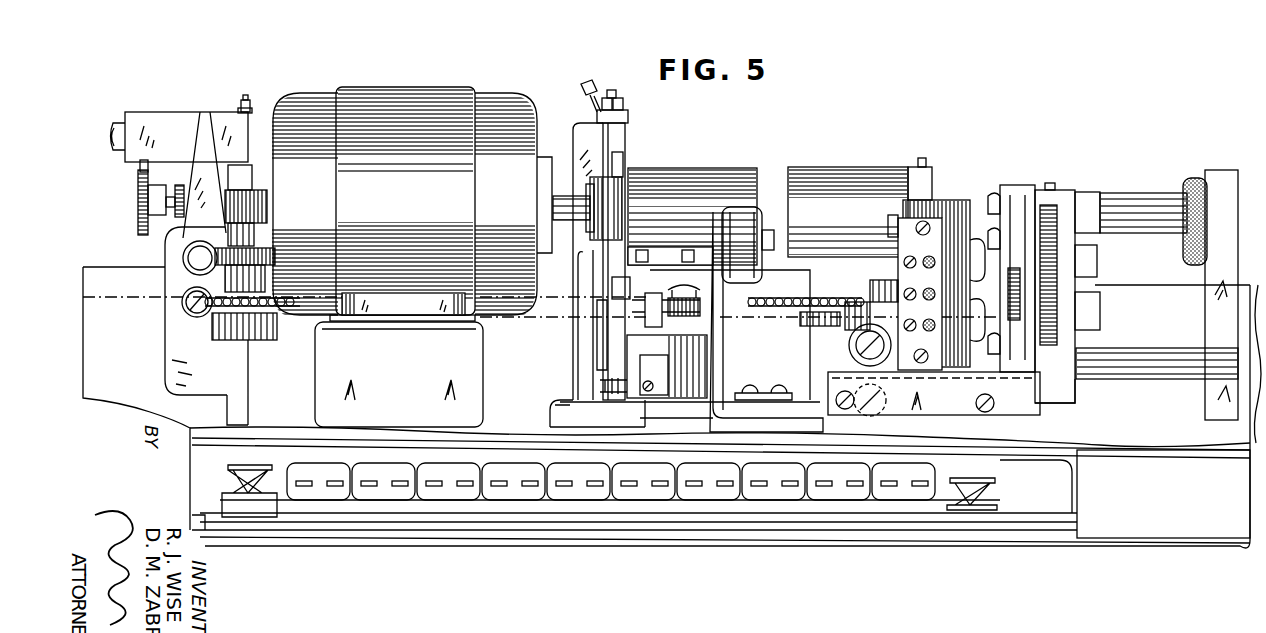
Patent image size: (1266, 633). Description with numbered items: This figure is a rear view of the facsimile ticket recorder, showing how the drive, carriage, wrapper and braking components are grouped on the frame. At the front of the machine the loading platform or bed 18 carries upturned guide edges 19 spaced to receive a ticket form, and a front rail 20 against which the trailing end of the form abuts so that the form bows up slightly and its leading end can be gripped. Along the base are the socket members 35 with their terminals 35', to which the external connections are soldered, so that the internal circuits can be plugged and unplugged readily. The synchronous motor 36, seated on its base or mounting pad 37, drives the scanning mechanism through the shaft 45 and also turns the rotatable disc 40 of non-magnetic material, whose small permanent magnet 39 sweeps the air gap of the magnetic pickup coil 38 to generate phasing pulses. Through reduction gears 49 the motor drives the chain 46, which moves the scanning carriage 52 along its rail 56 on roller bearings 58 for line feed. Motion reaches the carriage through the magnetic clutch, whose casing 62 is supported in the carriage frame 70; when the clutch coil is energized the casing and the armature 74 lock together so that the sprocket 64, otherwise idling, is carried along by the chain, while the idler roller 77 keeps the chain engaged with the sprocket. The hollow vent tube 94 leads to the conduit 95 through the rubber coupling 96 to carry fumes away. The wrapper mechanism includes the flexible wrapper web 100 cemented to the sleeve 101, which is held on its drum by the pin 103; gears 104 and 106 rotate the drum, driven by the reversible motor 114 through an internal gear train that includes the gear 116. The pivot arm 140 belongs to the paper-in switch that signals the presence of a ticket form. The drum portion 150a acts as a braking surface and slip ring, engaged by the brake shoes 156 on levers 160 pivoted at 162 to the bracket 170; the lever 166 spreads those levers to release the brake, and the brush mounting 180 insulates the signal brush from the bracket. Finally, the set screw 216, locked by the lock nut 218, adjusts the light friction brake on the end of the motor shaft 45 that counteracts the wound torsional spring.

The loading platform or bed 18 is at (658, 256).
The upturned guide edges 19 is at (640, 256).
The front rail 20 is at (688, 256).
The socket members 35 is at (611, 518).
The terminals 35' is at (612, 527).
The synchronous motor 36 is at (416, 194).
The base or mounting pad 37 is at (404, 377).
The magnetic pickup coil 38 is at (147, 118).
The permanent magnet 39 is at (140, 167).
The rotatable disc 40 is at (138, 228).
The shaft 45 is at (168, 212).
The chain 46 is at (285, 293).
The reduction gears 49 is at (212, 258).
The scanning carriage 52 is at (1020, 190).
The rail 56 is at (830, 378).
The roller bearings 58 is at (852, 342).
The magnetic clutch casing 62 is at (713, 346).
The sprocket 64 is at (702, 285).
The carriage frame 70 is at (720, 405).
The armature 74 is at (697, 324).
The idler roller 77 is at (652, 312).
The hollow vent tube 94 is at (1137, 210).
The conduit 95 is at (1228, 172).
The rubber coupling 96 is at (1190, 176).
The flexible wrapper web 100 is at (823, 168).
The sleeve 101 is at (931, 168).
The pin 103 is at (921, 158).
The gear 104 is at (1055, 190).
The gear 106 is at (1020, 299).
The reversible motor 114 is at (958, 200).
The gear 116 is at (1057, 312).
The pivot arm 140 is at (774, 234).
The drum portion 150a is at (622, 213).
The brake shoes 156 is at (617, 197).
The lever 160 is at (603, 262).
The pivot 162 is at (618, 172).
The lever 166 is at (602, 333).
The bracket 170 is at (563, 410).
The mounting 180 is at (580, 125).
The set screw 216 is at (248, 98).
The lock nut 218 is at (250, 110).